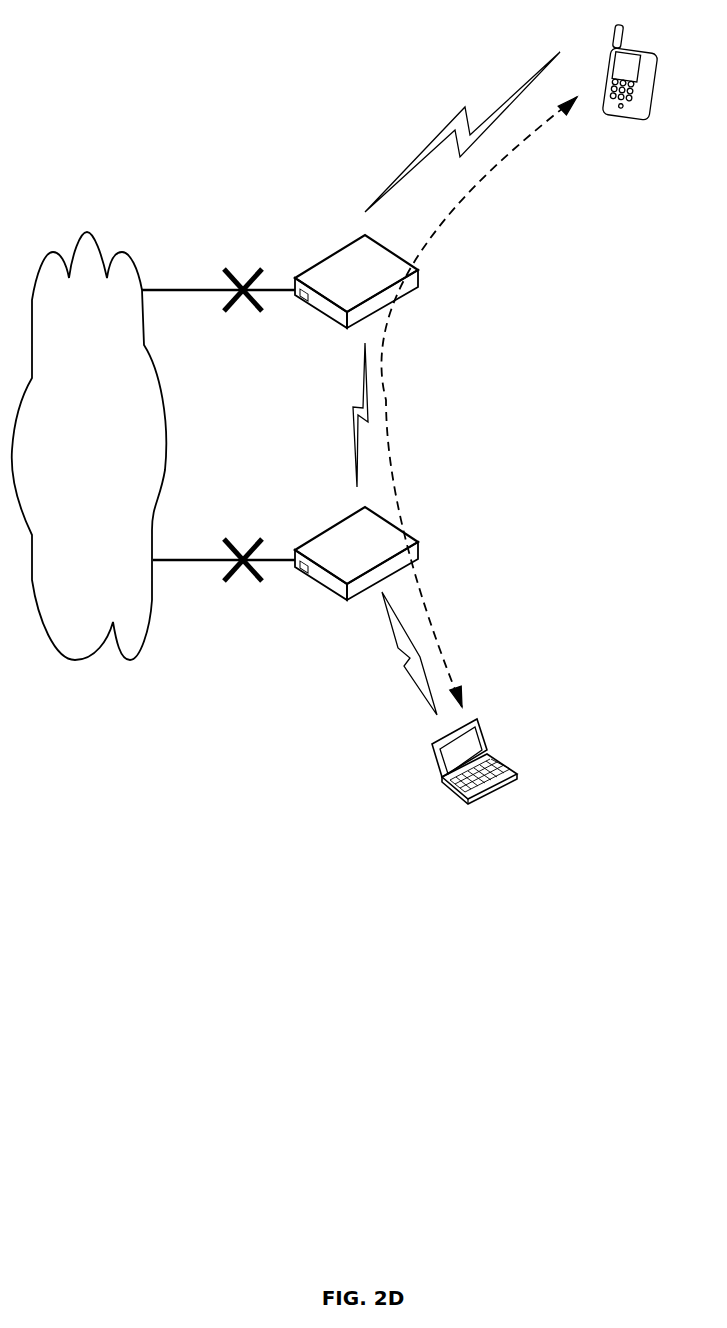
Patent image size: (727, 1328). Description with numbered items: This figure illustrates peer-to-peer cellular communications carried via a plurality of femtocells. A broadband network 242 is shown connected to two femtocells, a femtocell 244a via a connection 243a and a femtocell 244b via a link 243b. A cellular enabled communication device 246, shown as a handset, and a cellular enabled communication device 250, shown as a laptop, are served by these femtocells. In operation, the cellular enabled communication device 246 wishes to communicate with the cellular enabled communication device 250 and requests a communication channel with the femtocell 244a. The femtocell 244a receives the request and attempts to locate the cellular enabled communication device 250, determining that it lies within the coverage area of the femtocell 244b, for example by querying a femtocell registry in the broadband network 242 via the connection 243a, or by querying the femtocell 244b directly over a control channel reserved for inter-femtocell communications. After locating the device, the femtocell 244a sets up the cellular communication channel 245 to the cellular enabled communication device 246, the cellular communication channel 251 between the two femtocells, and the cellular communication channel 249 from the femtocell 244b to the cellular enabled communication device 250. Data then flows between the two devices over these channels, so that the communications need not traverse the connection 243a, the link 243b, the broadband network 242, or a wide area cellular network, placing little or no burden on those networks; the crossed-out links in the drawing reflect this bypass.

The broadband network 242 is at (83, 232).
The connection 243a is at (203, 287).
The link 243b is at (203, 557).
The femtocell 244a is at (330, 258).
The femtocell 244b is at (328, 529).
The cellular communication channel 245 is at (432, 140).
The cellular enabled communication device 246 is at (632, 44).
The cellular communication channel 249 is at (405, 668).
The cellular enabled communication device 250 is at (442, 788).
The cellular communication channel 251 is at (353, 407).